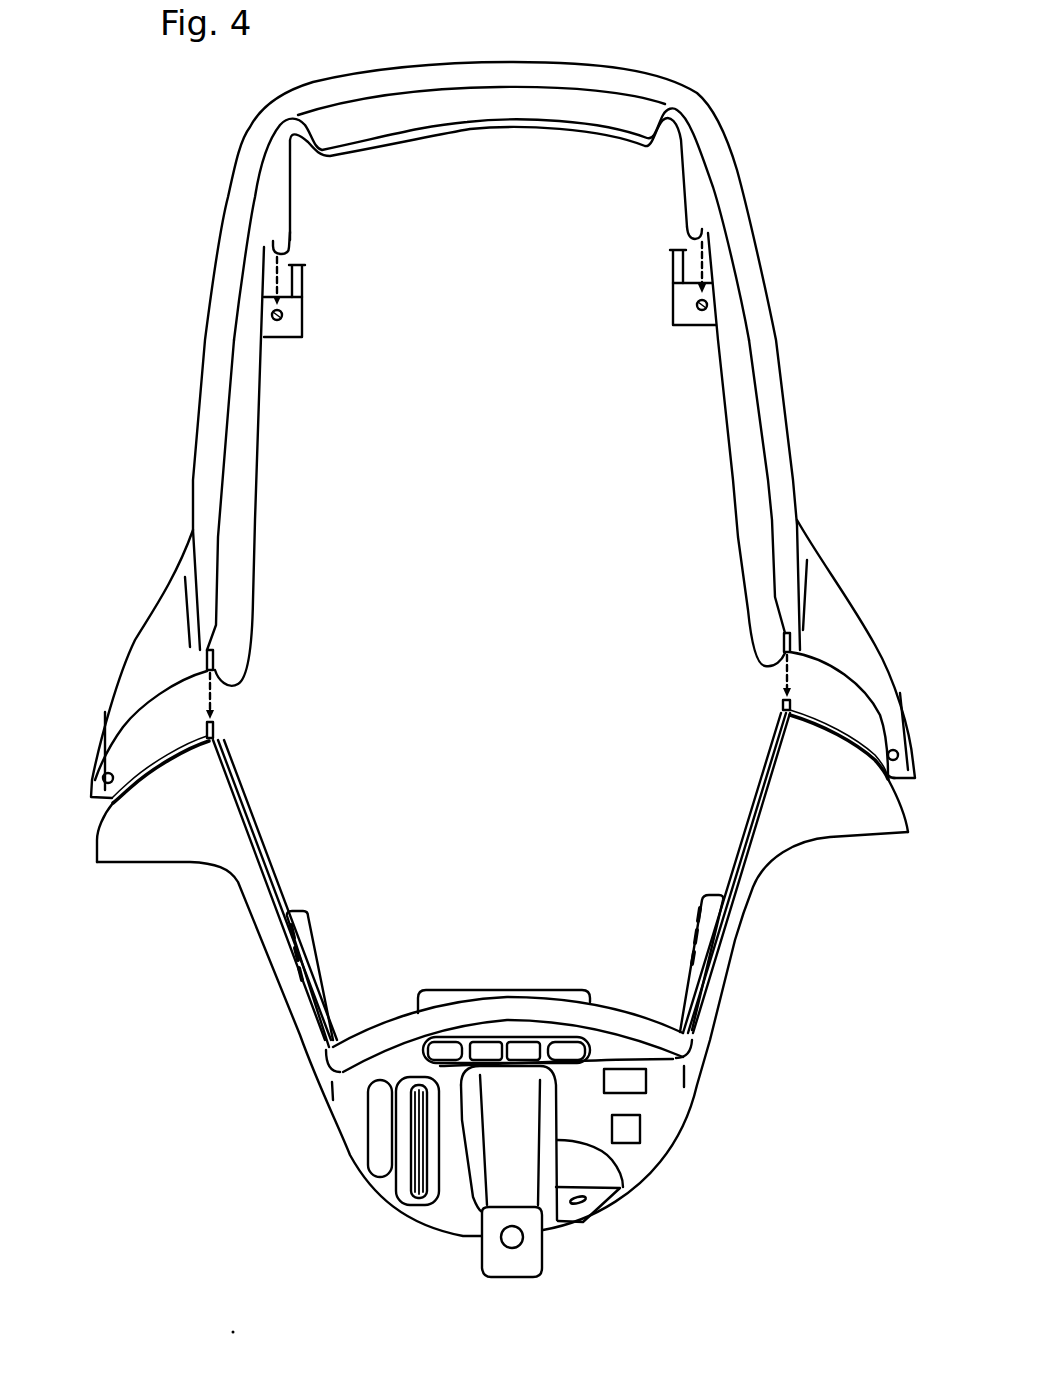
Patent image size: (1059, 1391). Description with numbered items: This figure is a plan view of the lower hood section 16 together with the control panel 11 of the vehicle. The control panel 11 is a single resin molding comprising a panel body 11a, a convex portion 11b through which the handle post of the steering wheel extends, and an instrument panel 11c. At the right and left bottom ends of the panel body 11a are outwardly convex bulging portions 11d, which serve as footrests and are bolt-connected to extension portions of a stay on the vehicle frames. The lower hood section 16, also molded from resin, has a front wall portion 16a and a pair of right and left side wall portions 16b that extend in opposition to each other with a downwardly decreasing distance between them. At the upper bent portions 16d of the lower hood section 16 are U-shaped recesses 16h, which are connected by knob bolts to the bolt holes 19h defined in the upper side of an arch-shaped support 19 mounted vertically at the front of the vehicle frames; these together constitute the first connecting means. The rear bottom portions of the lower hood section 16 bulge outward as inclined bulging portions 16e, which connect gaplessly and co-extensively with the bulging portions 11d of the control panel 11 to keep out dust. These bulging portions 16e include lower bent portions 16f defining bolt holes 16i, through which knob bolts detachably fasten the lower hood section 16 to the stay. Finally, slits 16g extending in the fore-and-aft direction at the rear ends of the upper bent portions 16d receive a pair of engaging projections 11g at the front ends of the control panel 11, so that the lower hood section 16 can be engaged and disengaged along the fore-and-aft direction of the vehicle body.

The control panel 11 is at (290, 1039).
The panel body 11a is at (718, 987).
The convex portion 11b is at (470, 1198).
The instrument panel 11c is at (656, 1140).
The bulging portions 11d is at (190, 840).
The engaging projections 11g is at (216, 728).
The lower hood section 16 is at (786, 363).
The front wall portion 16a is at (470, 78).
The side pillar of roof frame 16b is at (200, 430).
The upper bent portions 16d is at (284, 232).
The U-shaped recesses 16h is at (272, 244).
The bulging portions 16e is at (143, 625).
The lower bent portions 16f is at (118, 767).
The slits 16g is at (216, 660).
The bolt holes 16i is at (106, 785).
The arch-shaped support 19 is at (301, 313).
The bolt holes 19h is at (281, 321).